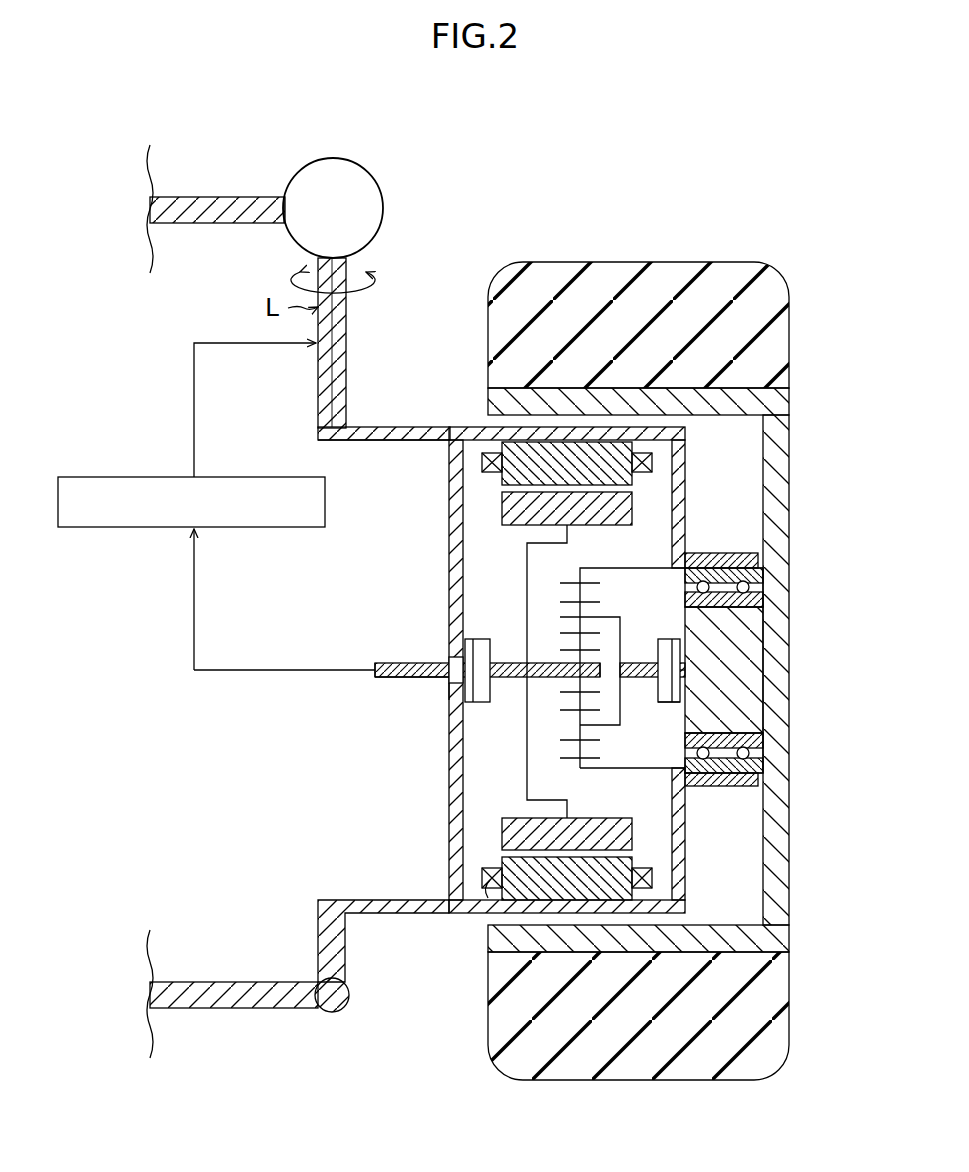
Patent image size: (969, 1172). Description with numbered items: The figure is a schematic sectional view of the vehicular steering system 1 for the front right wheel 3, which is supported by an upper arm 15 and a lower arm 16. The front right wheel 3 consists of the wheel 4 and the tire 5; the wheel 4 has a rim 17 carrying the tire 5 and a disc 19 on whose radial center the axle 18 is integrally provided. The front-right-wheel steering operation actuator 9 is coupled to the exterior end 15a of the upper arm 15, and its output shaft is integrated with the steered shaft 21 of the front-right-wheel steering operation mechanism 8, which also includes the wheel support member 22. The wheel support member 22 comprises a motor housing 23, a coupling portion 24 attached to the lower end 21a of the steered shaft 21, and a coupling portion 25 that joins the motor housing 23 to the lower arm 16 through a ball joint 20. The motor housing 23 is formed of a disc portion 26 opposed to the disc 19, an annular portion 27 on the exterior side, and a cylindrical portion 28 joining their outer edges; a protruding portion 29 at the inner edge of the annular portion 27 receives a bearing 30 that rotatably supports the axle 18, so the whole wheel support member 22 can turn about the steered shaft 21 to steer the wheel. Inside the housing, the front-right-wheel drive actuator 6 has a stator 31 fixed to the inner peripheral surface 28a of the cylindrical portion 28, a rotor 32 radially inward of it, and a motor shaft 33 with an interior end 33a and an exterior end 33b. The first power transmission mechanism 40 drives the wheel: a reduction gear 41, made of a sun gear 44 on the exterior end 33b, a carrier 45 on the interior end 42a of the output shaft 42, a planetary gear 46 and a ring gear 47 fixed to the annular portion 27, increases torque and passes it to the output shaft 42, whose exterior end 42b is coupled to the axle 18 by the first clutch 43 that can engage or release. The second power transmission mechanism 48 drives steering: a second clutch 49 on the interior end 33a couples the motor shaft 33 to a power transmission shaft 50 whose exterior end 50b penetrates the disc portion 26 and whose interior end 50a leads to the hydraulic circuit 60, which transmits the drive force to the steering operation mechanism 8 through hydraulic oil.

The vehicular steering system 1 is at (663, 661).
The front right wheel 3 is at (674, 637).
The wheel 4 is at (674, 669).
The tire 5 is at (672, 265).
The front-right-wheel drive actuator 6 is at (524, 554).
The front-right-wheel steering operation mechanism 8 is at (352, 343).
The front-right-wheel steering operation actuator 9 is at (333, 166).
The upper arm 15 is at (185, 198).
The exterior end 15a is at (273, 200).
The lower arm 16 is at (175, 990).
The rim 17 is at (722, 418).
The axle 18 is at (735, 712).
The disc 19 is at (772, 440).
The ball joint 20 is at (338, 1012).
The steered shaft 21 is at (320, 372).
The lower end 21a is at (320, 418).
The wheel support member 22 is at (433, 425).
The motor housing 23 is at (688, 478).
The coupling portion 24 is at (360, 442).
The coupling portion 25 is at (385, 915).
The disc portion 26 is at (452, 845).
The annular portion 27 is at (688, 512).
The cylindrical portion 28 is at (463, 915).
The inner peripheral surface 28a is at (490, 880).
The protruding portion 29 is at (728, 560).
The bearing 30 is at (765, 585).
The stator 31 is at (500, 478).
The rotor 32 is at (500, 515).
The motor shaft 33 is at (508, 681).
The interior end 33a is at (470, 645).
The exterior end 33b is at (575, 662).
The first power transmission mechanism 40 is at (643, 772).
The reduction gear 41 is at (640, 566).
The output shaft 42 is at (640, 685).
The interior end 42a is at (662, 648).
The exterior end 42b is at (690, 690).
The first clutch 43 is at (682, 672).
The sun gear 44 is at (565, 712).
The carrier 45 is at (622, 640).
The planetary gear 46 is at (565, 758).
The ring gear 47 is at (657, 772).
The second power transmission mechanism 48 is at (248, 685).
The second clutch 49 is at (462, 652).
The power transmission shaft 50 is at (403, 682).
The interior end 50a is at (377, 680).
The exterior end 50b is at (452, 690).
The hydraulic circuit 60 is at (163, 477).